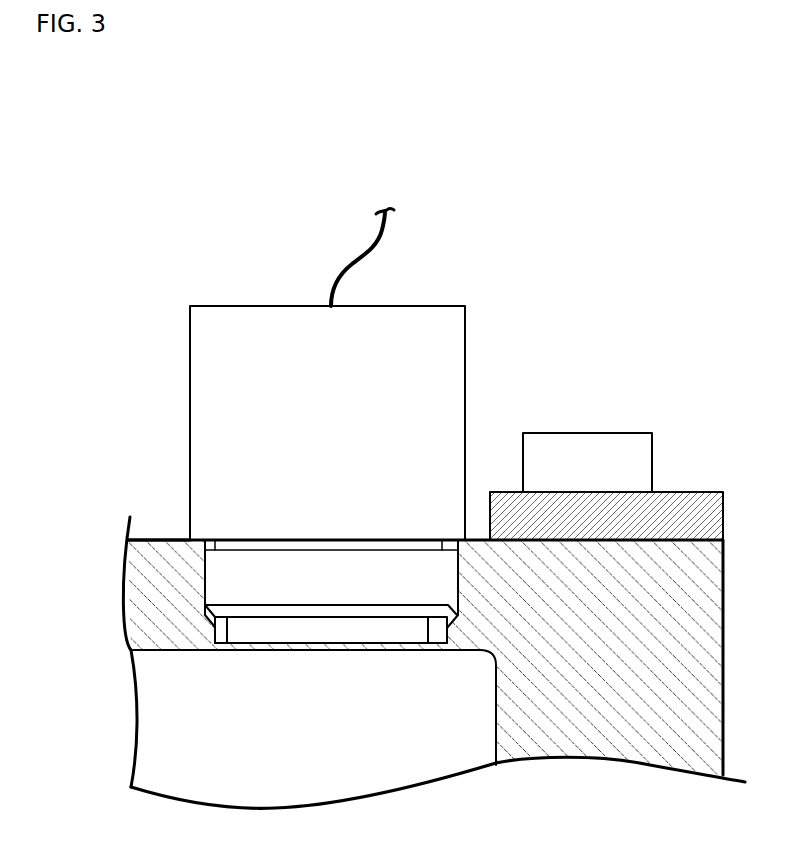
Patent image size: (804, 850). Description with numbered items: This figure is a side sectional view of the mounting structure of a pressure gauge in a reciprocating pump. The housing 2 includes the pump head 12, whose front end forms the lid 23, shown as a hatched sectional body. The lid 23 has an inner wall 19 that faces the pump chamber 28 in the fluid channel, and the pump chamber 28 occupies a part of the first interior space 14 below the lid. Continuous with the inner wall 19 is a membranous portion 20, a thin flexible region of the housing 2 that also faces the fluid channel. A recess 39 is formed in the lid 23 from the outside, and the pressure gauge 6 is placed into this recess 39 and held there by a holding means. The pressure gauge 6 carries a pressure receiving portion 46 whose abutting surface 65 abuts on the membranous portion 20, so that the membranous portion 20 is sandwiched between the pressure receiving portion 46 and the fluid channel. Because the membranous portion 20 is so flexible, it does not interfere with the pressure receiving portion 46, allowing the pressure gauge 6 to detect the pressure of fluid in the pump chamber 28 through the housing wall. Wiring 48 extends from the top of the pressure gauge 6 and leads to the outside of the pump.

The housing 2 is at (693, 462).
The pressure gauge 6 is at (468, 352).
The pump head 12 is at (727, 553).
The first interior space 14 is at (286, 785).
The inner wall 19 is at (193, 651).
The membranous portion 20 is at (311, 652).
The lid 23 is at (156, 540).
The pump chamber 28 is at (438, 729).
The recess 39 is at (457, 575).
The pressure receiving portion 46 is at (262, 637).
The wiring 48 is at (378, 249).
The abutting surface 65 is at (364, 652).